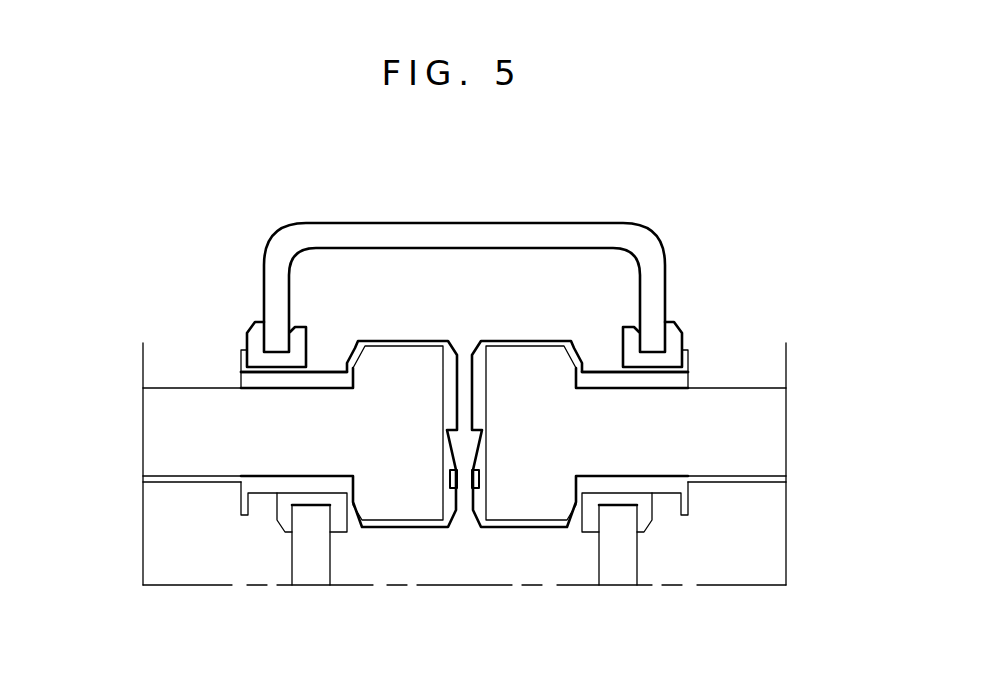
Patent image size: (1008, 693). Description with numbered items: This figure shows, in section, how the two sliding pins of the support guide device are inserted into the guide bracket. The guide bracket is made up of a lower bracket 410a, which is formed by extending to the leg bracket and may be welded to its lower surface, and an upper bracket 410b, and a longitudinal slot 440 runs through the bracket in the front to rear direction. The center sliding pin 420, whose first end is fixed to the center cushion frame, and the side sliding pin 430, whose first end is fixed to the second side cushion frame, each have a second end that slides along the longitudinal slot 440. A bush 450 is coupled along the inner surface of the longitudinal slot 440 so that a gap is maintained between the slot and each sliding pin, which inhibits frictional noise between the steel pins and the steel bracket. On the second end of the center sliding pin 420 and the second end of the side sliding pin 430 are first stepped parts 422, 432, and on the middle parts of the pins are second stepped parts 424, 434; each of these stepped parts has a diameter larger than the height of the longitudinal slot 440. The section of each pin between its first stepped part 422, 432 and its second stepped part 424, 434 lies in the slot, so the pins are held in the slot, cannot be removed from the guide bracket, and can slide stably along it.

The lower bracket 410a is at (616, 572).
The upper bracket 410b is at (468, 235).
The center sliding pin 420 is at (163, 459).
The first stepped part 422 is at (355, 350).
The second stepped part 424 is at (241, 350).
The side sliding pin 430 is at (768, 452).
The first stepped part 432 is at (576, 352).
The second stepped part 434 is at (690, 352).
The longitudinal slot 440 is at (280, 372).
The bush 450 is at (258, 332).